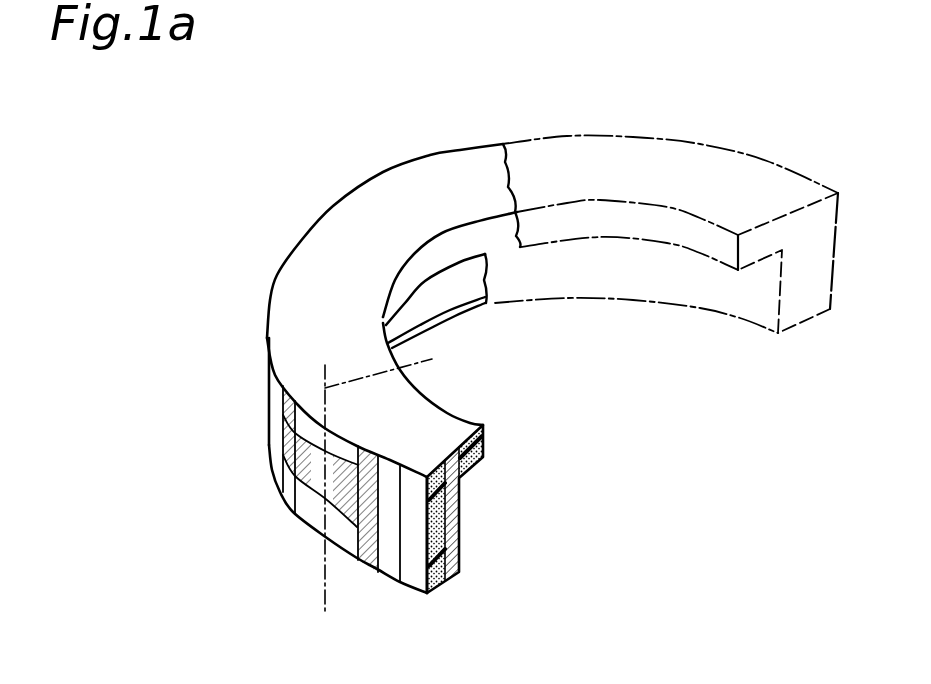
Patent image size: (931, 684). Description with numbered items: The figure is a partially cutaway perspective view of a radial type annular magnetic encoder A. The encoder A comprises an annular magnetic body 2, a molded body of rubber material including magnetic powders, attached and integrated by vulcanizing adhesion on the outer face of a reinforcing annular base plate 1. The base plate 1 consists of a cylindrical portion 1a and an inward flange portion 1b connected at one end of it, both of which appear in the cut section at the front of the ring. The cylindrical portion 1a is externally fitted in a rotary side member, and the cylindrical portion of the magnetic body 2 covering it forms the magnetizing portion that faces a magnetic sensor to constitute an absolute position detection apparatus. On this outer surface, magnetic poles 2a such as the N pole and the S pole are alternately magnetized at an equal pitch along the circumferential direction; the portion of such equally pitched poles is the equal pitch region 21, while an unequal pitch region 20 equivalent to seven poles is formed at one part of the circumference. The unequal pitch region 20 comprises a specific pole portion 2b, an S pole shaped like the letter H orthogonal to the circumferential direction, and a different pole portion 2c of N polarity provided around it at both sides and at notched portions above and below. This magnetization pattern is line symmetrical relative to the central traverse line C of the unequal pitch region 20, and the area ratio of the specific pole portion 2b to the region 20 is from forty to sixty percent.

The annular magnetic encoder A is at (430, 148).
The annular base plate 1 is at (553, 473).
The cylindrical portion 1a is at (452, 532).
The inward flange portion 1b is at (455, 470).
The annular magnetic body 2 is at (305, 257).
The magnetic poles 2a is at (413, 585).
The specific pole portion 2b is at (283, 495).
The different pole portion 2c is at (278, 440).
The unequal pitch region 20 is at (183, 457).
The equal pitch region 21 is at (330, 208).
The central traverse line C is at (389, 475).